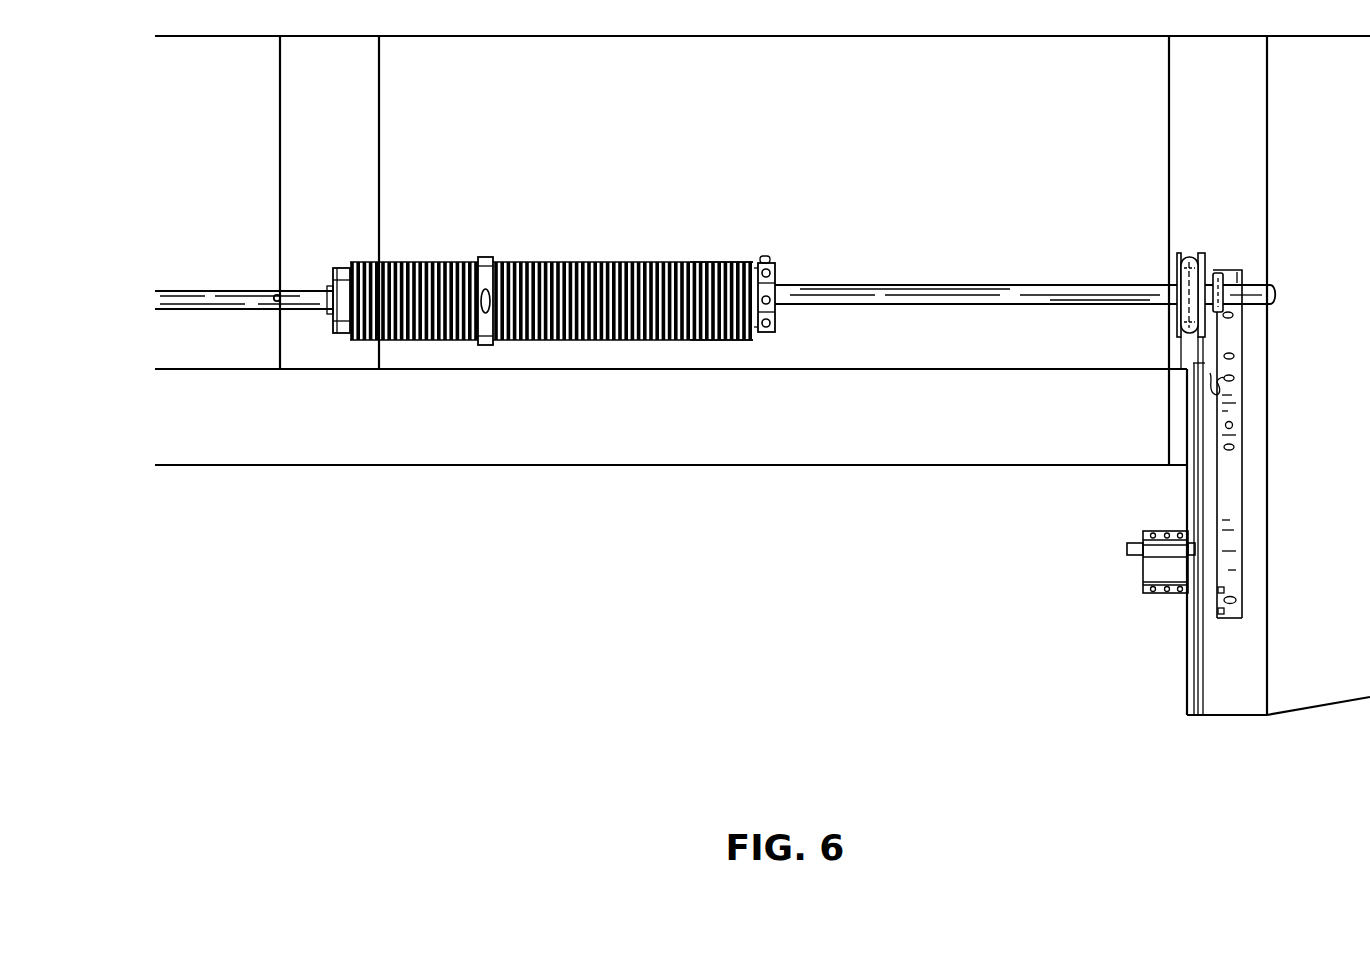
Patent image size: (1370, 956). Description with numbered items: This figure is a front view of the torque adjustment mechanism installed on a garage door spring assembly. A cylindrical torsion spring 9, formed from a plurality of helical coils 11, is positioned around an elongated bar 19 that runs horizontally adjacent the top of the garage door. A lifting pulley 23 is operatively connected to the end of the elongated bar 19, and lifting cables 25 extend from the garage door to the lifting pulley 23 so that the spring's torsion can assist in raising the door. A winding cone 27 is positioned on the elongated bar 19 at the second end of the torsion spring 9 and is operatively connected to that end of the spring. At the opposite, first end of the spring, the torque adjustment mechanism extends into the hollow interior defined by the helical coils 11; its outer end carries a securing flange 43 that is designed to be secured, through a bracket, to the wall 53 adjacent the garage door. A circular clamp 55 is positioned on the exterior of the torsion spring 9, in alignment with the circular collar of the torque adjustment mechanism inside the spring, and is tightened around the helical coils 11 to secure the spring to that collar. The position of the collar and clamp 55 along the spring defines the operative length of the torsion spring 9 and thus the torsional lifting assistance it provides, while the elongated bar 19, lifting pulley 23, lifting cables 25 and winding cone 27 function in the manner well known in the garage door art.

The wall 53 is at (316, 101).
The securing flange 43 is at (341, 262).
The circular clamp 55 is at (486, 257).
The torsion spring 9 is at (603, 262).
The helical coils 11 is at (672, 262).
The winding cone 27 is at (778, 278).
The elongated bar 19 is at (902, 285).
The lifting pulley 23 is at (1203, 258).
The lifting cables 25 is at (1185, 383).